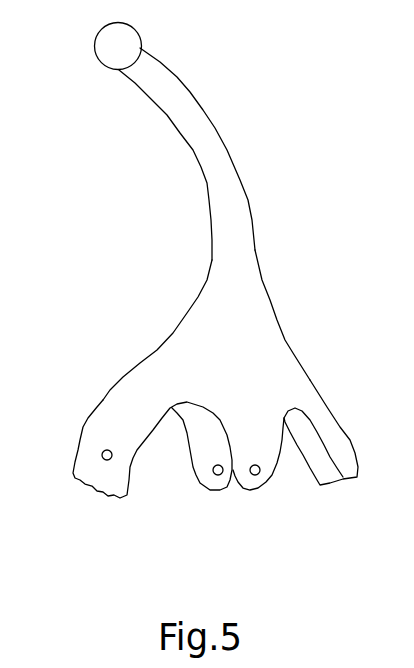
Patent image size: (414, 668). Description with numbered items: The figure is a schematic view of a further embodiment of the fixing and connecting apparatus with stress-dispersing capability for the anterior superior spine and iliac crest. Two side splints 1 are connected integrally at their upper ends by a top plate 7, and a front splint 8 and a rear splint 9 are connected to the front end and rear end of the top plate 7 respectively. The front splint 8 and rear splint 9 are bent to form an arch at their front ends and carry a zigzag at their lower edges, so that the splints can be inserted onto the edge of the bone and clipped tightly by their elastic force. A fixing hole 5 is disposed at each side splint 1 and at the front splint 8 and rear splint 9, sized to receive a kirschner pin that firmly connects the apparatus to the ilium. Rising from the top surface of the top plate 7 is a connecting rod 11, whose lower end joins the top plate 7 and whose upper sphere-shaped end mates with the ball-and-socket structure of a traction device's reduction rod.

The side splint 1 is at (267, 442).
The fixing hole 5 is at (102, 455).
The top plate 7 is at (242, 355).
The front splint 8 is at (105, 428).
The rear splint 9 is at (351, 455).
The connecting rod 11 is at (245, 228).